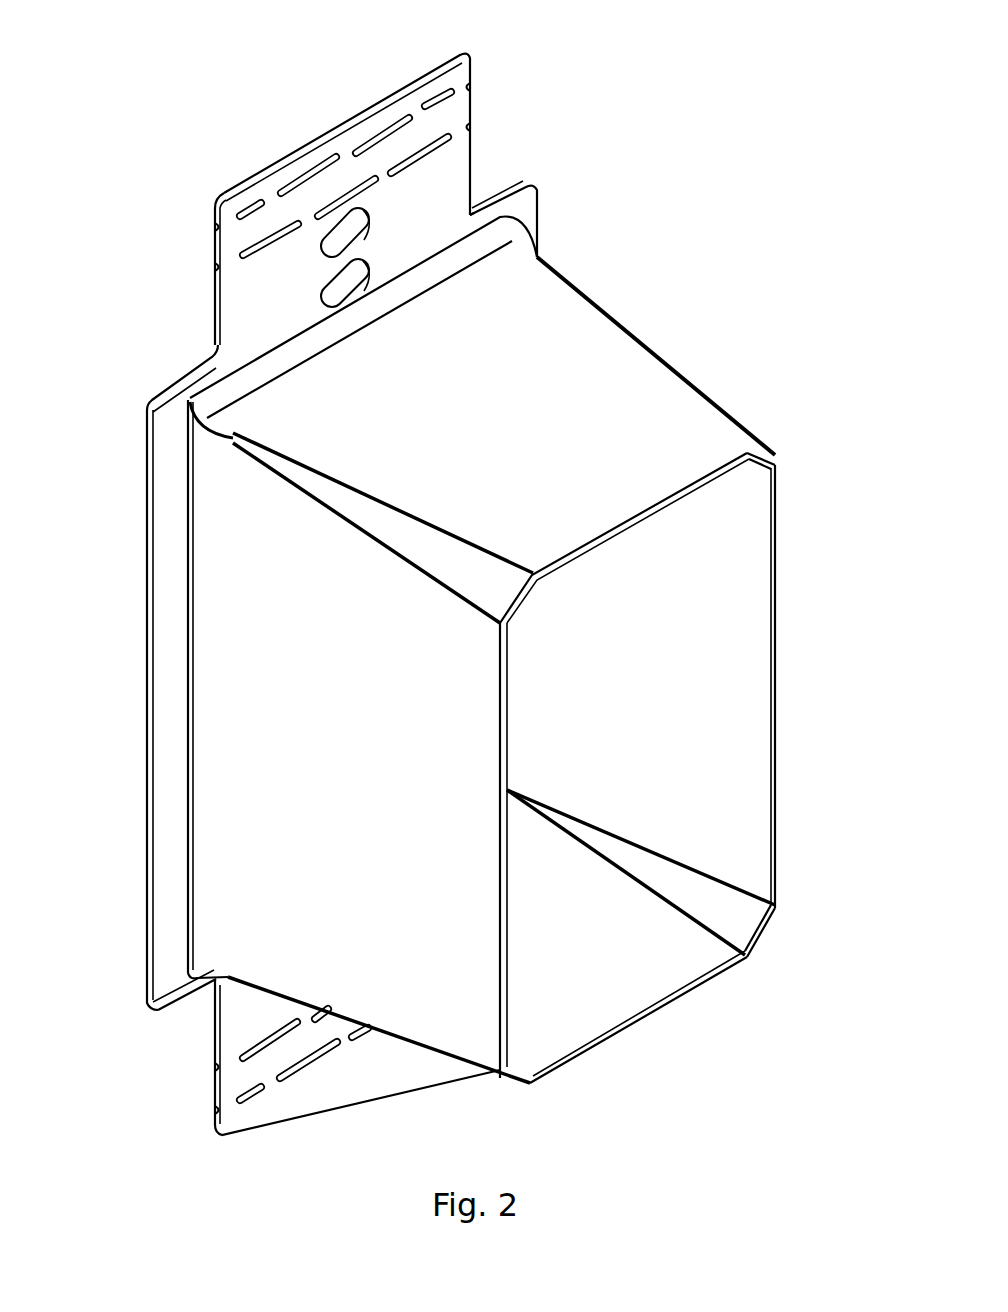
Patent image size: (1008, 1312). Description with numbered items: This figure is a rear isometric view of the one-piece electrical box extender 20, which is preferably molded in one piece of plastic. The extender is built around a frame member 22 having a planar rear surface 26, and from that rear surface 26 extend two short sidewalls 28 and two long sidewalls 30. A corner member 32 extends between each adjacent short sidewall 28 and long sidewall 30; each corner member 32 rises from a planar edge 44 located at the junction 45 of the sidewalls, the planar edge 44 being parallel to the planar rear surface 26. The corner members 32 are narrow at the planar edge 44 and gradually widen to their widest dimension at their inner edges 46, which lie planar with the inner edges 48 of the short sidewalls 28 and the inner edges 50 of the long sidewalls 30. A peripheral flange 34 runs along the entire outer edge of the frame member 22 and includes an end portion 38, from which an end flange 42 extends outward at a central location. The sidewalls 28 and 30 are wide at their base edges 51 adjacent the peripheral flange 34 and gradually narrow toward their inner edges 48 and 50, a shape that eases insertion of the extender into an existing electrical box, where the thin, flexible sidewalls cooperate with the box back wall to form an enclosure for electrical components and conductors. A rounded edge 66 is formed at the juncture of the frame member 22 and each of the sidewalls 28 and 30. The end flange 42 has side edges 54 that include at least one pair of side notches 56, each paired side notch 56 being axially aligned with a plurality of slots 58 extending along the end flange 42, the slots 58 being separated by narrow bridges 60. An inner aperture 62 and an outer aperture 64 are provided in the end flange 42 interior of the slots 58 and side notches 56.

The box extender 20 is at (150, 160).
The frame member 22 is at (540, 227).
The planar rear surface 26 is at (308, 611).
The short sidewalls 28 is at (481, 691).
The long sidewalls 30 is at (532, 709).
The corner member 32 is at (467, 565).
The peripheral flange 34 is at (147, 812).
The end portion 38 is at (510, 186).
The end flange 42 is at (470, 67).
The planar edge 44 is at (263, 440).
The junction 45 is at (213, 433).
The inner edges 46 is at (752, 455).
The inner edges 48 is at (655, 1020).
The inner edges 50 is at (778, 635).
The base edges 51 is at (355, 330).
The side edges 54 is at (215, 325).
The side notches 56 is at (215, 267).
The slots 58 is at (298, 188).
The narrow bridges 60 is at (420, 112).
The inner aperture 62 is at (322, 300).
The outer aperture 64 is at (372, 222).
The rounded edge 66 is at (455, 265).